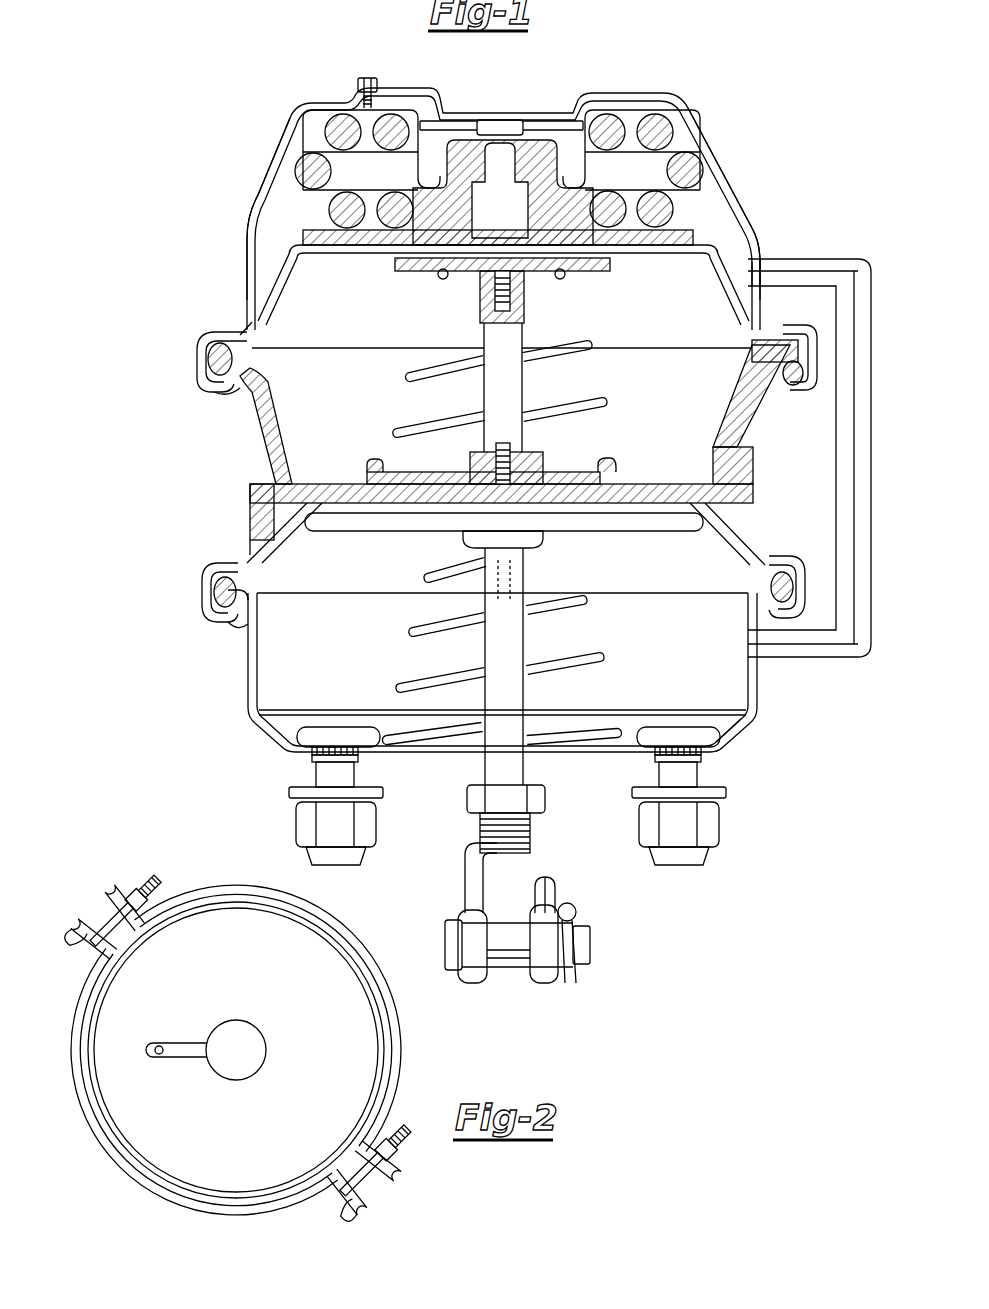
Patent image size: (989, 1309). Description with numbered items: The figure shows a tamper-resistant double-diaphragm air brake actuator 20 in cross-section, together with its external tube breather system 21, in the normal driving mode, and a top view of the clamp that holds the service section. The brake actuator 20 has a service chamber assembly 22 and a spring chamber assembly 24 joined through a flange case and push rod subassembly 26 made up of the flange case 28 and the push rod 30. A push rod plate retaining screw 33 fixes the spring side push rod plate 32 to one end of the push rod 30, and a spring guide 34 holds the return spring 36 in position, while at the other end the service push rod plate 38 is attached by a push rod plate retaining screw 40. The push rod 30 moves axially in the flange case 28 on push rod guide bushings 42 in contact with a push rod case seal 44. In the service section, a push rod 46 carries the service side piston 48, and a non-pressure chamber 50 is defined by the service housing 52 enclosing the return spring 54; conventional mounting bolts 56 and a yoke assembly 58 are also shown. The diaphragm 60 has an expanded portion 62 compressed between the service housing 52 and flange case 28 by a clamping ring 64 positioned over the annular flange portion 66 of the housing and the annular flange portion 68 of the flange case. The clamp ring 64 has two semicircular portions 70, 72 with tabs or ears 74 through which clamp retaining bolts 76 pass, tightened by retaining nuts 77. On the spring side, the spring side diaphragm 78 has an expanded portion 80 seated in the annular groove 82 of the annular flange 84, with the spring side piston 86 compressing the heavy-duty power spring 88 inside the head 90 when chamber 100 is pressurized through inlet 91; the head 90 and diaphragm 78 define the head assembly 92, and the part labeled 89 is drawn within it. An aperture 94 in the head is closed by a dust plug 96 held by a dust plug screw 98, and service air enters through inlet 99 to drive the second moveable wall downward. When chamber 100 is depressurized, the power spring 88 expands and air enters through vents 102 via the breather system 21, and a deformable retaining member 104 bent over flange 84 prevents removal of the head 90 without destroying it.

In FIG. 1, the brake actuator 20 is at (232, 112).
In FIG. 1, the external tube breather system 21 is at (845, 257).
In FIG. 1, the service chamber assembly 22 is at (240, 673).
In FIG. 1, the spring chamber assembly 24 is at (240, 278).
In FIG. 1, the flange case and push rod subassembly 26 is at (262, 464).
In FIG. 1, the flange case 28 is at (746, 432).
In FIG. 1, the push rod 30 is at (530, 332).
In FIG. 1, the spring side push rod plate 32 is at (430, 274).
In FIG. 1, the push rod plate retaining screw 33 is at (478, 312).
In FIG. 1, the spring guide 34 is at (446, 278).
In FIG. 1, the return spring 36 is at (406, 378).
In FIG. 1, the service push rod plate 38 is at (592, 470).
In FIG. 1, the push rod plate retaining screw 40 is at (470, 478).
In FIG. 1, the push rod guide bushings 42 is at (522, 460).
In FIG. 1, the push rod case seal 44 is at (395, 470).
In FIG. 1, the push rod 46 is at (420, 604).
In FIG. 1, the service side piston 48 is at (673, 531).
In FIG. 1, the non-pressure chamber 50 is at (760, 676).
In FIG. 1, the service housing 52 is at (748, 714).
In FIG. 1, the return spring 54 is at (400, 672).
In FIG. 1, the mounting bolts 56 is at (702, 766).
In FIG. 1, the yoke assembly 58 is at (460, 882).
In FIG. 1, the diaphragm 60 is at (752, 572).
In FIG. 1, the expanded portion 62 is at (796, 578).
In FIG. 1, the clamping ring 64 is at (208, 582).
In FIG. 1, the annular flange portion 66 is at (226, 620).
In FIG. 1, the annular flange portion 68 is at (245, 548).
In FIG. 2, the semicircular portion 70 is at (271, 1050).
In FIG. 2, the semicircular portion 72 is at (275, 1212).
In FIG. 2, the tabs or ears 74 is at (110, 886).
In FIG. 2, the clamp retaining bolts 76 is at (100, 904).
In FIG. 2, the retaining nuts 77 is at (148, 874).
In FIG. 1, the spring side diaphragm 78 is at (285, 285).
In FIG. 1, the expanded portion 80 is at (265, 356).
In FIG. 1, the annular groove 82 is at (792, 388).
In FIG. 1, the annular flange 84 is at (226, 394).
In FIG. 1, the spring side piston 86 is at (305, 234).
In FIG. 1, the power spring 88 is at (307, 128).
In FIG. 1, the spring retainer 89 is at (408, 180).
In FIG. 1, the head 90 is at (252, 208).
In FIG. 1, the inlet 91 is at (756, 476).
In FIG. 1, the head assembly 92 is at (750, 210).
In FIG. 1, the aperture 94 is at (553, 120).
In FIG. 1, the dust cover or plug 96 is at (485, 118).
In FIG. 1, the dust plug screw 98 is at (366, 80).
In FIG. 1, the inlet 99 is at (250, 512).
In FIG. 1, the chamber 100 is at (250, 322).
In FIG. 1, the vents 102 is at (760, 268).
In FIG. 1, the deformable retaining member 104 is at (197, 356).